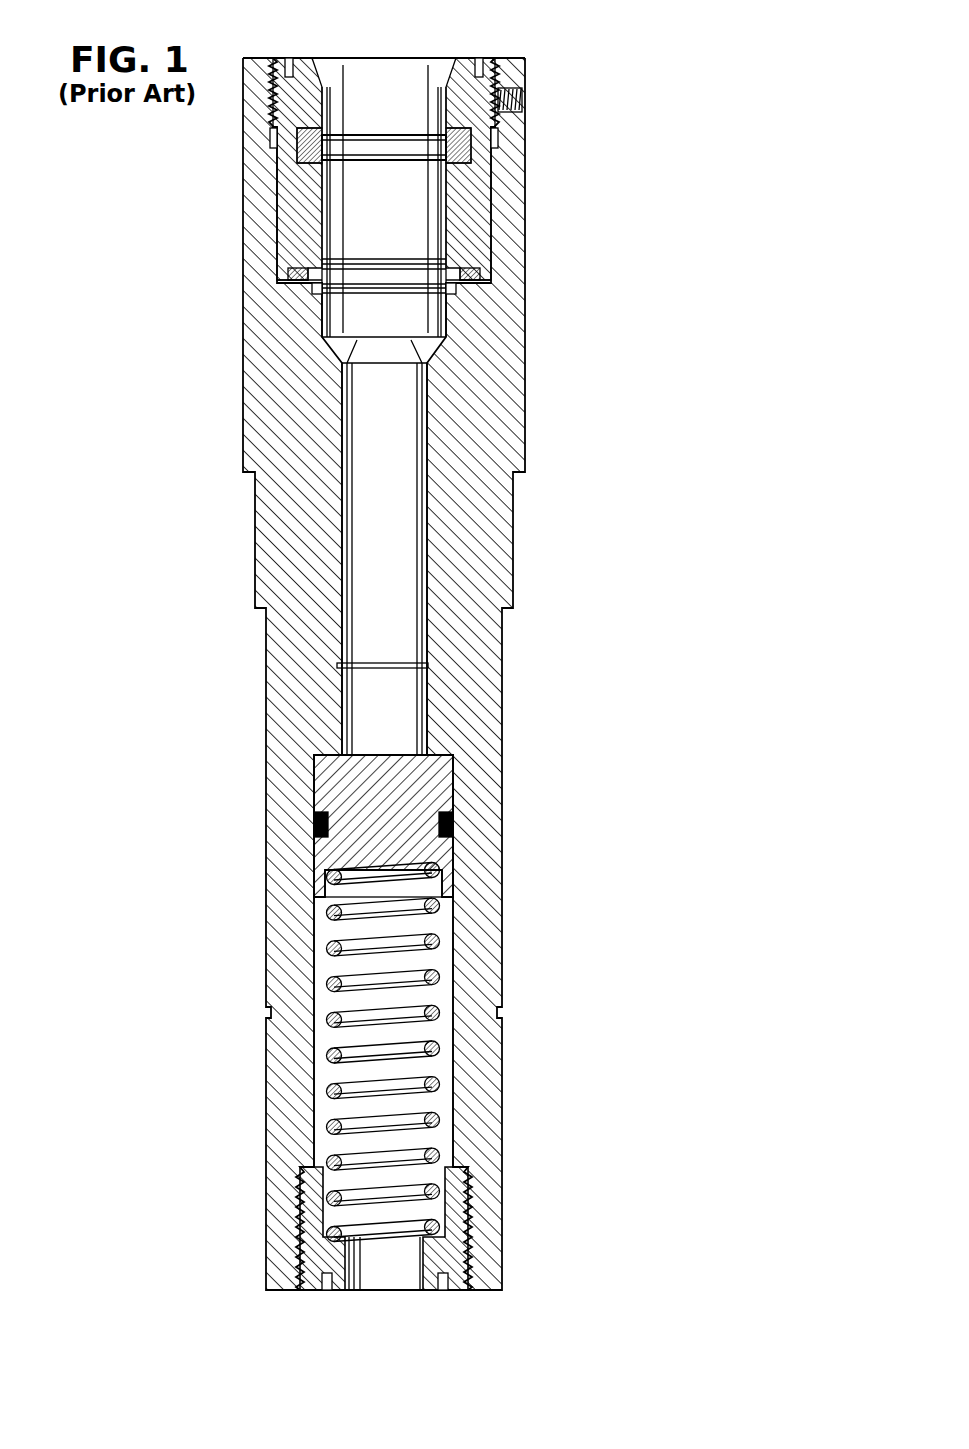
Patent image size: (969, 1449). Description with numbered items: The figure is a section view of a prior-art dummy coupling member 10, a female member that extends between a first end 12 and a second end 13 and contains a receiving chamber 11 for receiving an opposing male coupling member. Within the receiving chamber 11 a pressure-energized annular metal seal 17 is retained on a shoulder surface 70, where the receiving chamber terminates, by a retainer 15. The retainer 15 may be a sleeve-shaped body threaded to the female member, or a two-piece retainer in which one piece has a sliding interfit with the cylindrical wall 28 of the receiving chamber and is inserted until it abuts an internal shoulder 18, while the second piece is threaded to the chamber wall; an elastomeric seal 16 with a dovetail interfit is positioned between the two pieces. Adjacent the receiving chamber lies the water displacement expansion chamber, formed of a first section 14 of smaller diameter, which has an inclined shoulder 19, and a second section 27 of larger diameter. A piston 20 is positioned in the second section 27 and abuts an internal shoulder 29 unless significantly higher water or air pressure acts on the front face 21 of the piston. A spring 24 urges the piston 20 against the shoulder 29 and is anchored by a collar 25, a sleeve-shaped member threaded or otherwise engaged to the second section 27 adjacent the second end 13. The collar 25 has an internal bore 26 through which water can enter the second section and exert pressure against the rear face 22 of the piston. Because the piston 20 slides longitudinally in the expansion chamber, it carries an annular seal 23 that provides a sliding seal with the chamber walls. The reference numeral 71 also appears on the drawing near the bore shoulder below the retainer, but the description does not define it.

The dummy coupling member 10 is at (519, 677).
The receiving chamber 11 is at (418, 224).
The first end 12 is at (488, 62).
The second end 13 is at (478, 1292).
The first section 14 is at (425, 548).
The retainer 15 is at (470, 205).
The elastomeric seal 16 is at (470, 167).
The pressure-energized annular metal seal 17 is at (458, 290).
The internal shoulder 18 is at (282, 278).
The inclined shoulder 19 is at (347, 350).
The piston 20 is at (452, 852).
The front face 21 is at (418, 752).
The rear face 22 is at (370, 882).
The annular seal 23 is at (315, 828).
The spring 24 is at (335, 1018).
The collar 25 is at (468, 1205).
The internal bore 26 is at (420, 1272).
The second section 27 is at (452, 1030).
The cylindrical wall 28 is at (282, 184).
The internal shoulder 29 is at (313, 757).
The shoulder surface 70 is at (318, 284).
The bore shoulder 71 is at (323, 326).